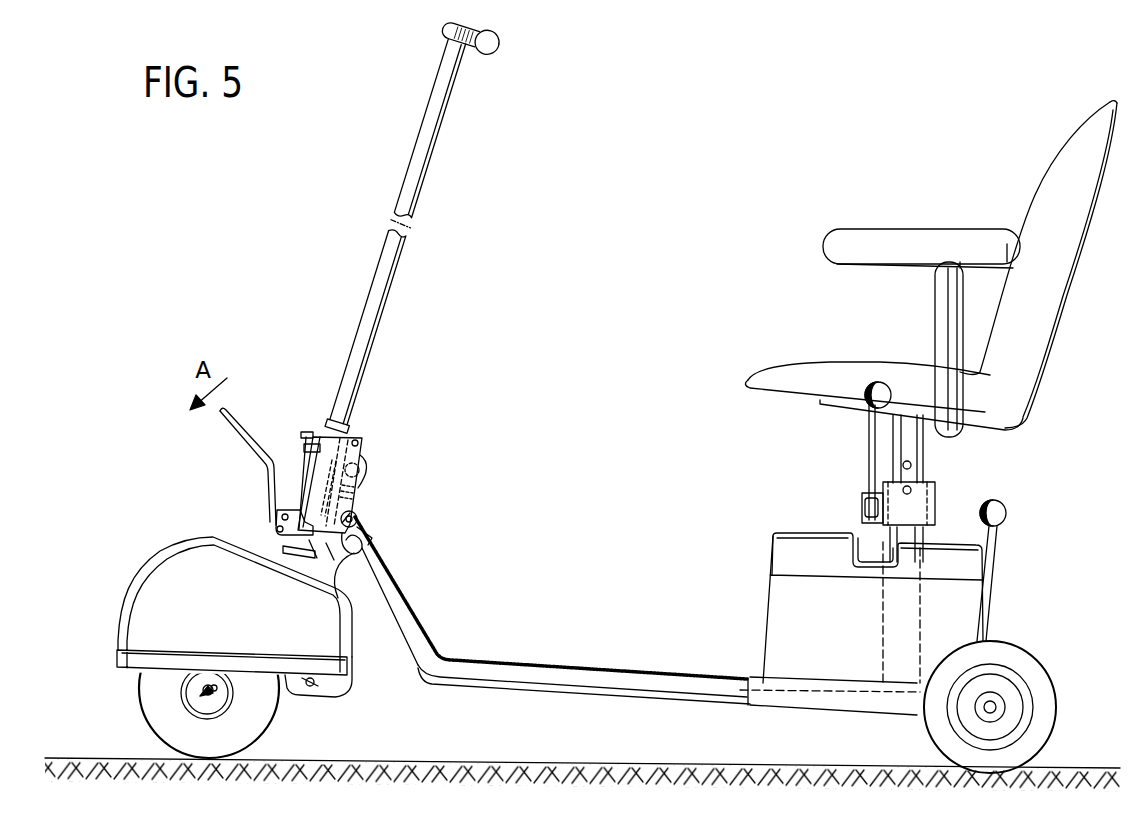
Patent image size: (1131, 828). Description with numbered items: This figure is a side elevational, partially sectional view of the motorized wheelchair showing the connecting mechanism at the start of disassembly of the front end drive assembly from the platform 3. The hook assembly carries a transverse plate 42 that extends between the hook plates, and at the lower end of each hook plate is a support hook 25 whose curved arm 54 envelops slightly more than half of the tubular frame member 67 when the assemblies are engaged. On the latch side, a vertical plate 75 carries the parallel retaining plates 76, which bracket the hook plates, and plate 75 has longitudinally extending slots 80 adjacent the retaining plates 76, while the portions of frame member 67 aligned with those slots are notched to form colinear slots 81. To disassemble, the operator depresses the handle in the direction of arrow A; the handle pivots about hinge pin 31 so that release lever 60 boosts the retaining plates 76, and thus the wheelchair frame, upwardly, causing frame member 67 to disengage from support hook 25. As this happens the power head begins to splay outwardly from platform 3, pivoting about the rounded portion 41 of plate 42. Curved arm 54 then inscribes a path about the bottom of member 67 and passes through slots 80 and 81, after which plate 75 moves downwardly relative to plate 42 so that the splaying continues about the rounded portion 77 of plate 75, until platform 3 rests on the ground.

The platform 3 is at (425, 680).
The support hook 25 is at (344, 552).
The hinge pin 31 is at (277, 527).
The rounded portion 41 is at (362, 453).
The transverse plate 42 is at (332, 487).
The curved arm 54 is at (364, 554).
The release lever 60 is at (294, 570).
The tubular frame member 67 is at (368, 532).
The plate 75 is at (354, 493).
The retaining plates 76 is at (333, 490).
The rounded portion 77 is at (358, 469).
The slots 80 is at (361, 508).
The colinear slots 81 is at (330, 494).